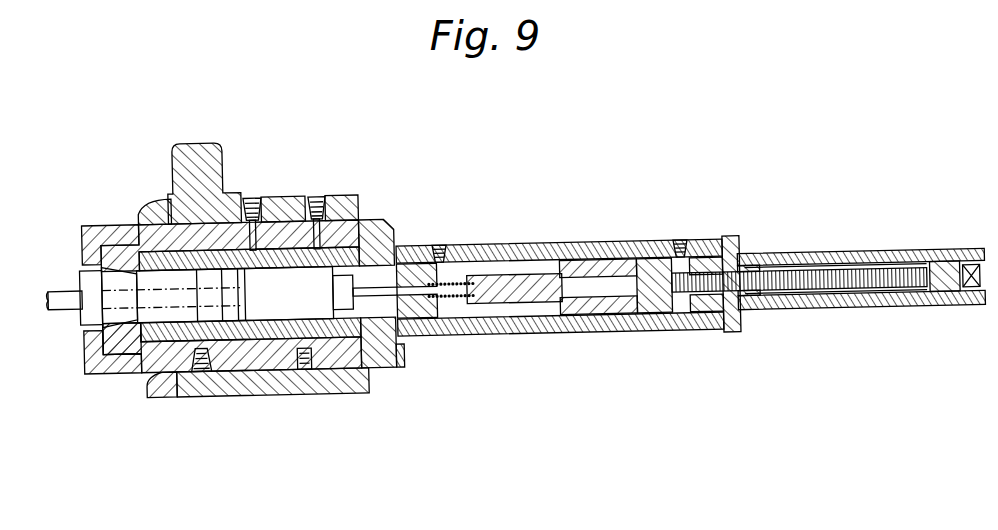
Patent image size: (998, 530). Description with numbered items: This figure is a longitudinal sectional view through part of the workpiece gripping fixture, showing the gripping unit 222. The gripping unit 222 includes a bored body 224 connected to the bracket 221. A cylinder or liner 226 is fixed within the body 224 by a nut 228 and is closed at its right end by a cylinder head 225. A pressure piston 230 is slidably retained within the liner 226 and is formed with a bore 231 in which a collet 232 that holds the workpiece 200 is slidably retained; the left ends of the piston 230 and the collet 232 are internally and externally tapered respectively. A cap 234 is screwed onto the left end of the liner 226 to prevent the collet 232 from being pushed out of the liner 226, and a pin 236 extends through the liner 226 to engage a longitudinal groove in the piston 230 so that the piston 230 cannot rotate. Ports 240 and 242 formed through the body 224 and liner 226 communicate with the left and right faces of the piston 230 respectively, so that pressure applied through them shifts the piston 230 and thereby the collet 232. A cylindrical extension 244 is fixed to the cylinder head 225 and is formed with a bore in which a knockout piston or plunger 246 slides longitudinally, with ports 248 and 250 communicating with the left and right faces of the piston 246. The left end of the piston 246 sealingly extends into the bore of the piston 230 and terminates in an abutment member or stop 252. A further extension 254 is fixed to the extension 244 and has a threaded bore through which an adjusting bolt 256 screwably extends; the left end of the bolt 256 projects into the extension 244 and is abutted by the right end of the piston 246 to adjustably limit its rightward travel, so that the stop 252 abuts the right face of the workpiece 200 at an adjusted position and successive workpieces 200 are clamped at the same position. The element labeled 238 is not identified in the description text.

The workpiece 200 is at (50, 290).
The bracket 221 is at (200, 150).
The gripping unit 222 is at (482, 206).
The bored body 224 is at (238, 192).
The cylinder head 225 is at (372, 218).
The cylinder or liner 226 is at (138, 227).
The nut 228 is at (157, 198).
The pressure piston 230 is at (305, 394).
The bore 231 is at (257, 398).
The collet 232 is at (118, 323).
The cap 234 is at (85, 228).
The pin 236 is at (208, 398).
The seal 238 is at (183, 372).
The port 240 is at (262, 196).
The port 242 is at (318, 196).
The cylindrical extension 244 is at (548, 244).
The knockout piston or plunger 246 is at (597, 272).
The port 248 is at (438, 243).
The port 250 is at (678, 242).
The abutment member or stop 252 is at (372, 383).
The extension 254 is at (883, 250).
The adjusting bolt 256 is at (800, 280).